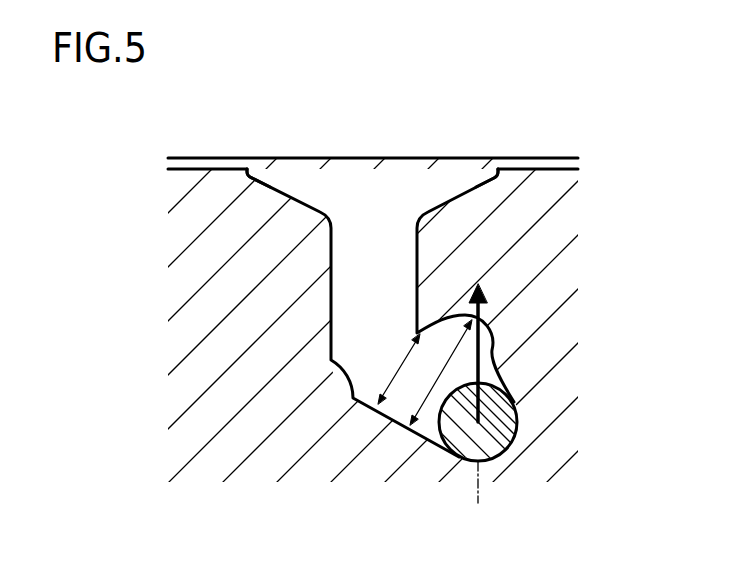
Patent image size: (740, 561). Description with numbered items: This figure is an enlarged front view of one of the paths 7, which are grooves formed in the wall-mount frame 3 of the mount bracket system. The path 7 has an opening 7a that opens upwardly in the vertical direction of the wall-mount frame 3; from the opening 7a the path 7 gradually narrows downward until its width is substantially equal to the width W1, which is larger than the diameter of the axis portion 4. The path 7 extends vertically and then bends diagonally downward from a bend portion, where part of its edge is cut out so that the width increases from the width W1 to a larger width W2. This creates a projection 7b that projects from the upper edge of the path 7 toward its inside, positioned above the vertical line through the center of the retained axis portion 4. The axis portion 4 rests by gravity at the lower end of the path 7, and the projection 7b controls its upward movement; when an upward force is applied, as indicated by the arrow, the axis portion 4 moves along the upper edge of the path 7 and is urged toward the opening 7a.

The wall-mount frame 3 is at (200, 157).
The path 7 is at (333, 287).
The opening 7a is at (254, 160).
The projection 7b is at (448, 316).
The axis portion 4 is at (496, 444).
The width W1 is at (398, 372).
The width W2 is at (430, 393).